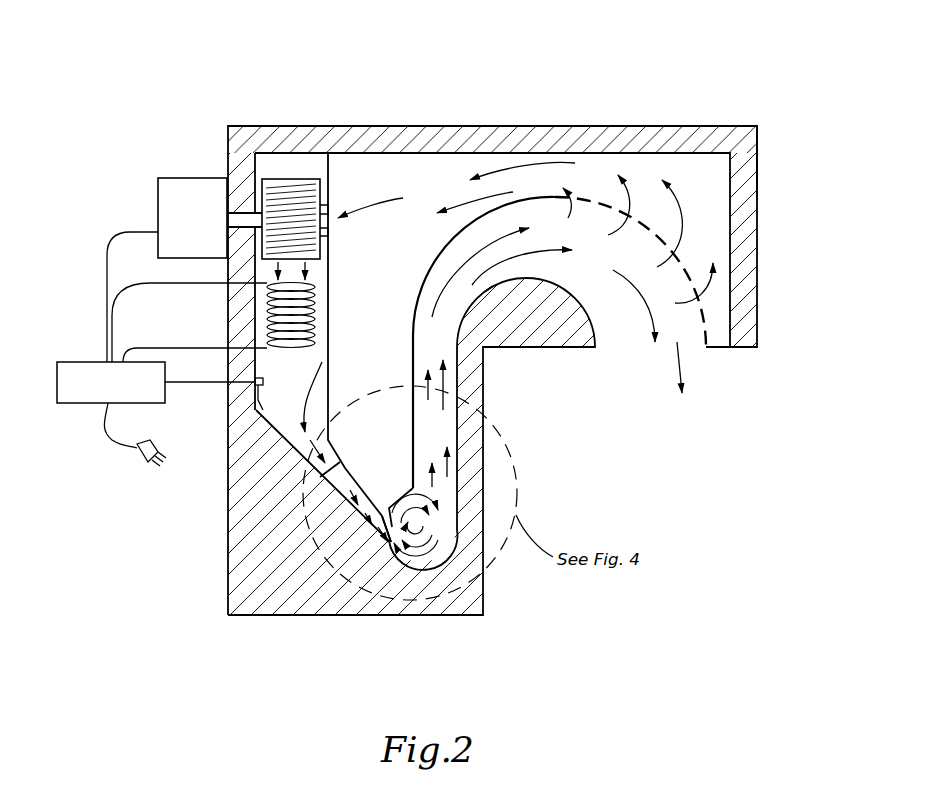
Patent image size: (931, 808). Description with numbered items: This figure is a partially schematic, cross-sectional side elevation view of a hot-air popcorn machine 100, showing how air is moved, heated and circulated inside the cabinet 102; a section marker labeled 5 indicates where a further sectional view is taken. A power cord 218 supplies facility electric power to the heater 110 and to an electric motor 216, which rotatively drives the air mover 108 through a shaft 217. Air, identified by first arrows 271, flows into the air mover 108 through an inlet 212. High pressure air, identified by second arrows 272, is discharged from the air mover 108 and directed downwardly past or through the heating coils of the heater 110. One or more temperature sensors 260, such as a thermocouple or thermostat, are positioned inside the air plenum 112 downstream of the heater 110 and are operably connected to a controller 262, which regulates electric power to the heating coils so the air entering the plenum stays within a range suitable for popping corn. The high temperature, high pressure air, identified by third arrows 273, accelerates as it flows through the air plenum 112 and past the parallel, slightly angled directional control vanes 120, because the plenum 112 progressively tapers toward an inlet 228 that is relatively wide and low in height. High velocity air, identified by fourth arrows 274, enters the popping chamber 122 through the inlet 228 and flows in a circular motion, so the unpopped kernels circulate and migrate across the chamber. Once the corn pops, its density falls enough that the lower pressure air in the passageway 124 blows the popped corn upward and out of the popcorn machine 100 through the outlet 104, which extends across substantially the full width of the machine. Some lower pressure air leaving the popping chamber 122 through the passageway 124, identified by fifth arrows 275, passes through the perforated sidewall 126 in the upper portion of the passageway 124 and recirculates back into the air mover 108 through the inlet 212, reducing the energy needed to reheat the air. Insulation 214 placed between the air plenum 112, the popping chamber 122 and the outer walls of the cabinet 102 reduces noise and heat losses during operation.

The popcorn machine 100 is at (507, 53).
The cabinet 102 is at (535, 125).
The outlet 104 is at (680, 350).
The air mover 108 is at (297, 180).
The heater 110 is at (312, 310).
The air plenum 112 is at (322, 373).
The vanes 120 is at (352, 458).
The popping chamber 122 is at (400, 518).
The passageway 124 is at (605, 280).
The perforated sidewall 126 is at (705, 317).
The inlet 212 is at (335, 212).
The insulation 214 is at (680, 138).
The electric motor 216 is at (158, 195).
The shaft 217 is at (247, 203).
The power cord 218 is at (128, 448).
The inlet 228 is at (368, 555).
The temperature sensor 260 is at (228, 427).
The controller 262 is at (170, 373).
The first arrows 271 is at (460, 213).
The second arrows 272 is at (228, 279).
The third arrows 273 is at (330, 345).
The fourth arrows 274 is at (389, 548).
The fifth arrows 275 is at (445, 375).
The section line for FIG. 5 is at (330, 108).